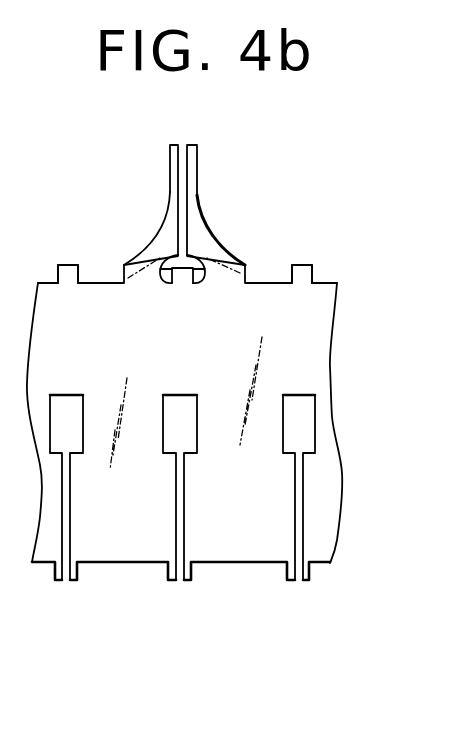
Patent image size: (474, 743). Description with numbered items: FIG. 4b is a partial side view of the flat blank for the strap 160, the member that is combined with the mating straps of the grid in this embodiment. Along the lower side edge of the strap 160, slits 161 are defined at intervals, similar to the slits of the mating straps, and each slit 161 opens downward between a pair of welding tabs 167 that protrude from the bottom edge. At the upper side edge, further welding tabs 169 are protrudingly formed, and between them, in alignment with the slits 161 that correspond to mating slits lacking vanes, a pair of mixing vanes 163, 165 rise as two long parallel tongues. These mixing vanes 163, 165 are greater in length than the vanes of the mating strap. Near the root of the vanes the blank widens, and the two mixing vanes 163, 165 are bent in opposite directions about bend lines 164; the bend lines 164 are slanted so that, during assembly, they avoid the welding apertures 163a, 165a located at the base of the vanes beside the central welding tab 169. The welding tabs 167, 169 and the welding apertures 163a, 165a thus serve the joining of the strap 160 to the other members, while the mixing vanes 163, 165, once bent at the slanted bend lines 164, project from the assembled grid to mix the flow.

The strap 160 is at (315, 509).
The slits 161 is at (72, 508).
The mixing vane 163 is at (197, 172).
The welding aperture 163a is at (203, 283).
The bend lines 164 is at (155, 237).
The mixing vane 165 is at (170, 171).
The welding aperture 165a is at (167, 283).
The welding tabs 167 is at (77, 578).
The welding tabs 169 is at (68, 265).